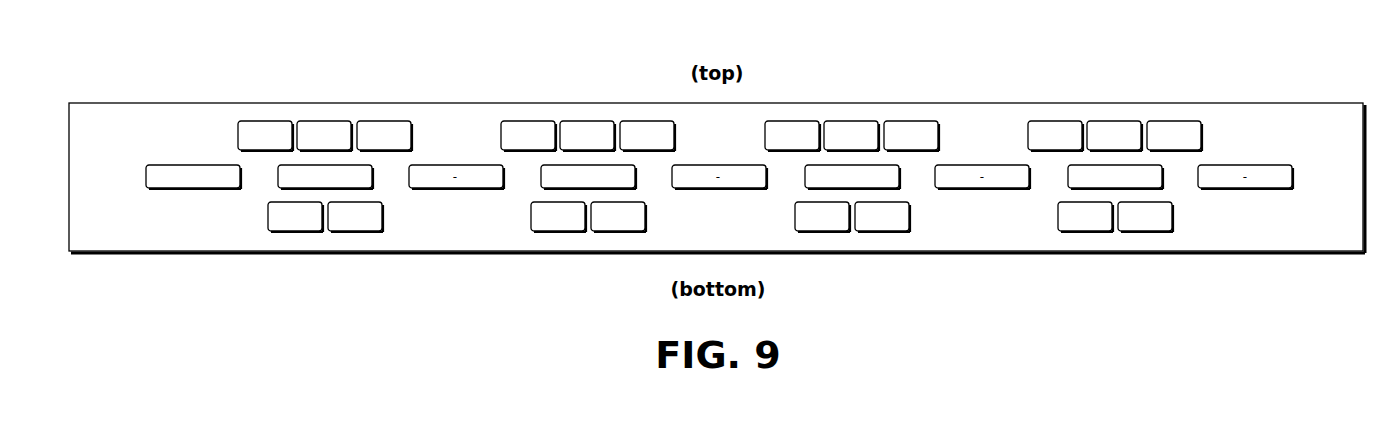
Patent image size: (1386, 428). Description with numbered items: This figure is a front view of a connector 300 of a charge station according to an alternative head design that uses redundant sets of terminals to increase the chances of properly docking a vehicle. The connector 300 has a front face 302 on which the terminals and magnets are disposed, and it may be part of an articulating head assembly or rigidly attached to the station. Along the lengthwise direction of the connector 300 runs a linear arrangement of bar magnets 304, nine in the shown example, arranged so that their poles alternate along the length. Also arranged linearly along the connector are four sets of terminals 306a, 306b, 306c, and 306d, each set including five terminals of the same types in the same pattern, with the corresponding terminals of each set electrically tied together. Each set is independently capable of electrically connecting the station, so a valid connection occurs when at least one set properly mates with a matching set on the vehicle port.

The connector 300 is at (1263, 103).
The front face 302 is at (1293, 254).
The magnets 304 is at (193, 164).
The first set of terminals 306a is at (312, 88).
The second set of terminals 306b is at (577, 88).
The third set of terminals 306c is at (857, 88).
The fourth set of terminals 306d is at (1118, 88).